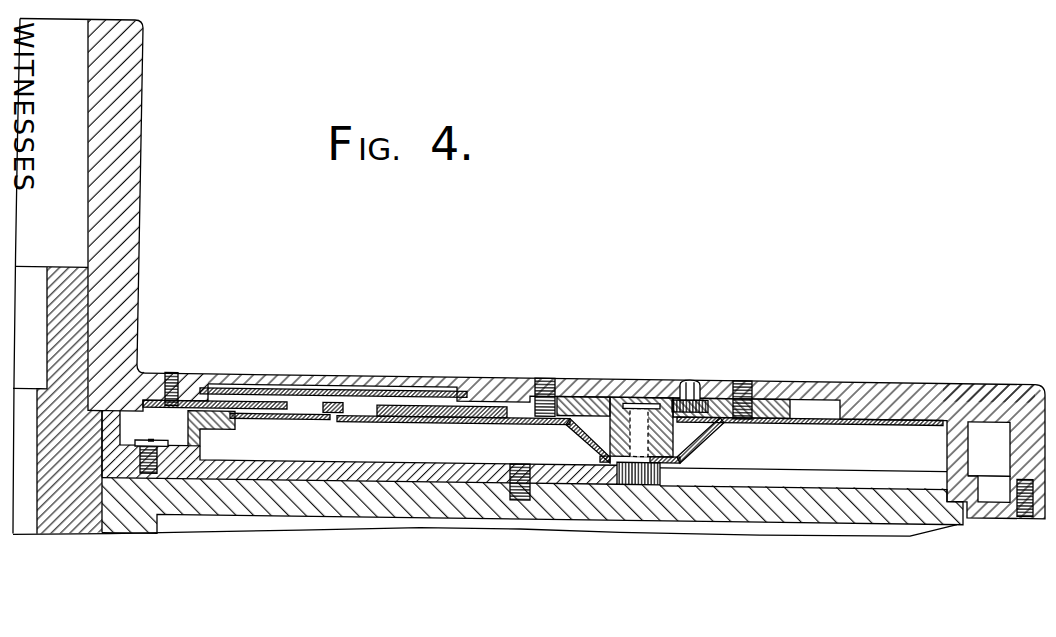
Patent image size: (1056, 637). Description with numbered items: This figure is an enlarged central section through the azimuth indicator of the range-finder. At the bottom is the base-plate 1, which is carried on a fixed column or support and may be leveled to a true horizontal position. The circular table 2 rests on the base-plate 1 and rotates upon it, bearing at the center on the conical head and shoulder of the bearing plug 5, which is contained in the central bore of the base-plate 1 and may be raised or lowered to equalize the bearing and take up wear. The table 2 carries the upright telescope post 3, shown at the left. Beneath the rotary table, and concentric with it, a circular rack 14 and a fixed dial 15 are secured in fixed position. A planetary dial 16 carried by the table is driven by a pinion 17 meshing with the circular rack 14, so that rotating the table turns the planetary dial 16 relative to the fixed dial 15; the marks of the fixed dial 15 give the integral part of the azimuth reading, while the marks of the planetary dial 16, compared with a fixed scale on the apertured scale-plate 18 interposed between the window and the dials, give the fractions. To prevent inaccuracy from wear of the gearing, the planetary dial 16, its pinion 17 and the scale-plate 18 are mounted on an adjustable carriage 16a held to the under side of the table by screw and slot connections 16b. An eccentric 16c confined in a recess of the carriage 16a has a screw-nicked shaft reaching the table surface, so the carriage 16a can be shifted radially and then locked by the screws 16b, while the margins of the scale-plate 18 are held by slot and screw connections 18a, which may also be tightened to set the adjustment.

The base-plate 1 is at (837, 498).
The circular table 2 is at (937, 392).
The telescope post 3 is at (110, 167).
The bearing plug 5 is at (53, 510).
The circular rack 14 is at (570, 468).
The dial 15 is at (275, 418).
The planetary dial 16 is at (363, 421).
The adjustable carriage 16a is at (695, 420).
The screws 16b is at (545, 373).
The eccentric 16c is at (687, 373).
The pinion 17 is at (660, 470).
The scale-plate 18 is at (408, 402).
The slot and screw connections 18a is at (173, 372).